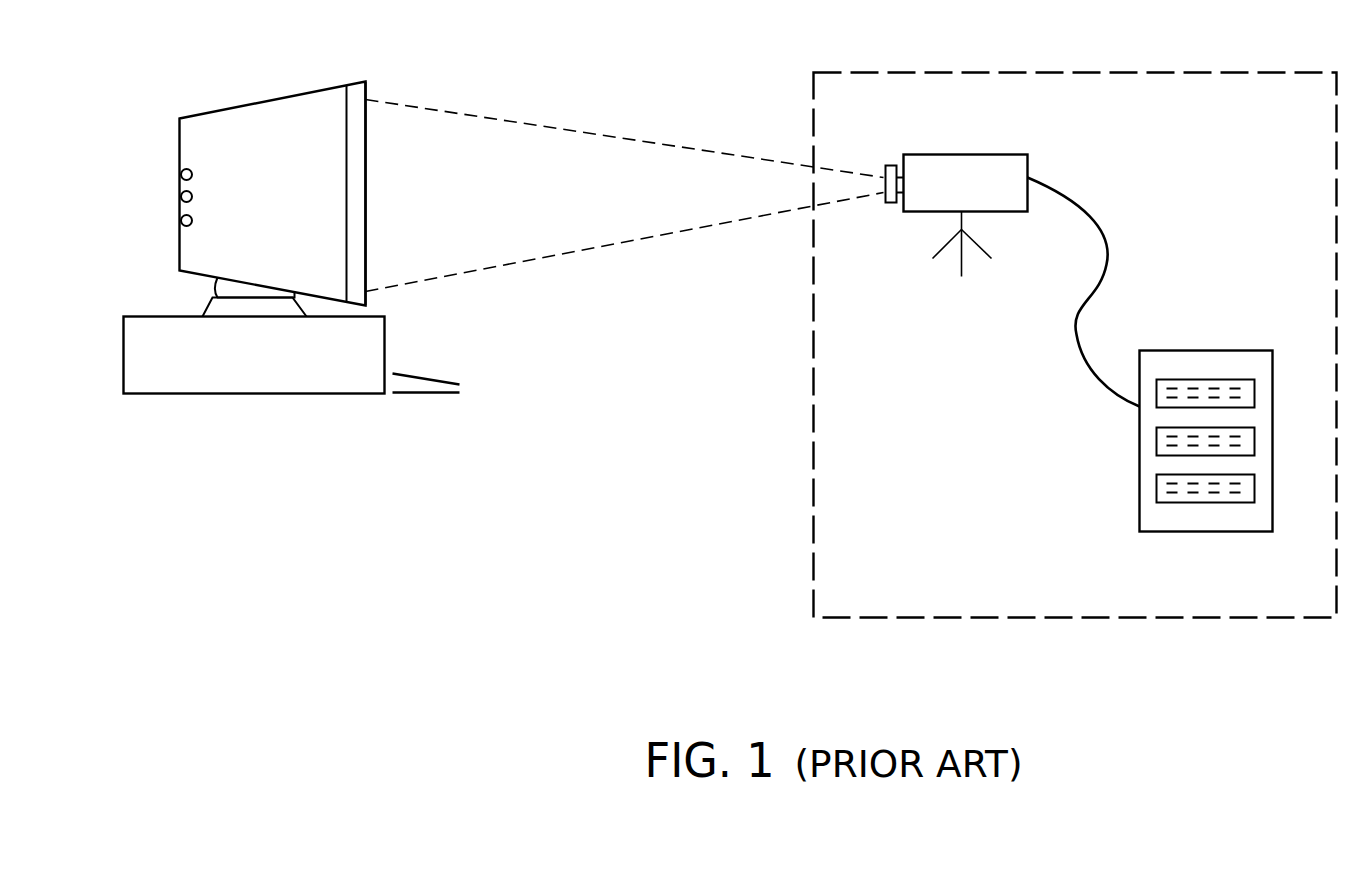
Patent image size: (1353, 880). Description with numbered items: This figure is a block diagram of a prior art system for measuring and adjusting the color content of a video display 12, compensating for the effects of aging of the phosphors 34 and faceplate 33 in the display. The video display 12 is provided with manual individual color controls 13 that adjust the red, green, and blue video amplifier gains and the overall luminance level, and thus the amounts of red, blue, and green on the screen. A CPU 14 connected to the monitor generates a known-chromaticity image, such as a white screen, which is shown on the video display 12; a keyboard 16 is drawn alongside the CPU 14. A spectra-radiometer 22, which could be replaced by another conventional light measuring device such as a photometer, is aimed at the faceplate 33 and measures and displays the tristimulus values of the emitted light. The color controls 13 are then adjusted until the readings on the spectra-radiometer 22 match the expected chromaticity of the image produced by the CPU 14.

The video display 12 is at (258, 98).
The manual individual color controls 13 is at (181, 173).
The CPU 14 is at (247, 395).
The keyboard 16 is at (428, 393).
The spectra-radiometer 22 is at (1113, 618).
The faceplate 33 is at (367, 130).
The phosphors 34 is at (345, 127).